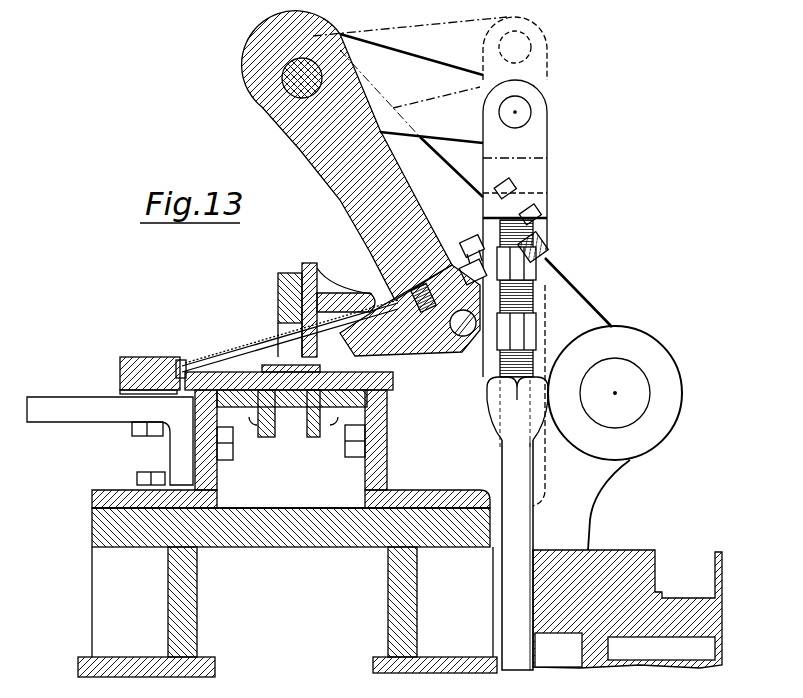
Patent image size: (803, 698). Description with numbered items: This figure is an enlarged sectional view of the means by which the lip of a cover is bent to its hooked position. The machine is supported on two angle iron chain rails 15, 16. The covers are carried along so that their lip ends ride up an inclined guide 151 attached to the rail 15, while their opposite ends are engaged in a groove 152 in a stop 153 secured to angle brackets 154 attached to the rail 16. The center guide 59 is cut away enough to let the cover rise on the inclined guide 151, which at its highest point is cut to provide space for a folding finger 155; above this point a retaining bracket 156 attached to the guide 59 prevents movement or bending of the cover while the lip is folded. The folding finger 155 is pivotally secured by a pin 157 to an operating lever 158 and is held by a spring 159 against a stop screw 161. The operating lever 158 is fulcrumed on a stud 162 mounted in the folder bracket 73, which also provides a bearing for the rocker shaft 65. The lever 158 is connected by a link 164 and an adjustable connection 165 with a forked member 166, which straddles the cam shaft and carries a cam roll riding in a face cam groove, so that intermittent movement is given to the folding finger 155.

The chain rail 15 is at (368, 470).
The chain rail 16 is at (202, 470).
The center guide 59 is at (280, 272).
The rocker shaft 65 is at (623, 372).
The folder bracket 73 is at (575, 300).
The inclined guide 151 is at (415, 408).
The groove 152 is at (172, 362).
The stop 153 is at (133, 357).
The angle bracket 154 is at (100, 405).
The folding finger 155 is at (360, 347).
The retaining bracket 156 is at (320, 293).
The pin 157 is at (467, 350).
The operating lever 158 is at (335, 194).
The spring 159 is at (413, 293).
The stop screw 161 is at (467, 240).
The stud 162 is at (283, 76).
The link 164 is at (410, 67).
The adjustable connection 165 is at (540, 153).
The forked member 166 is at (520, 530).